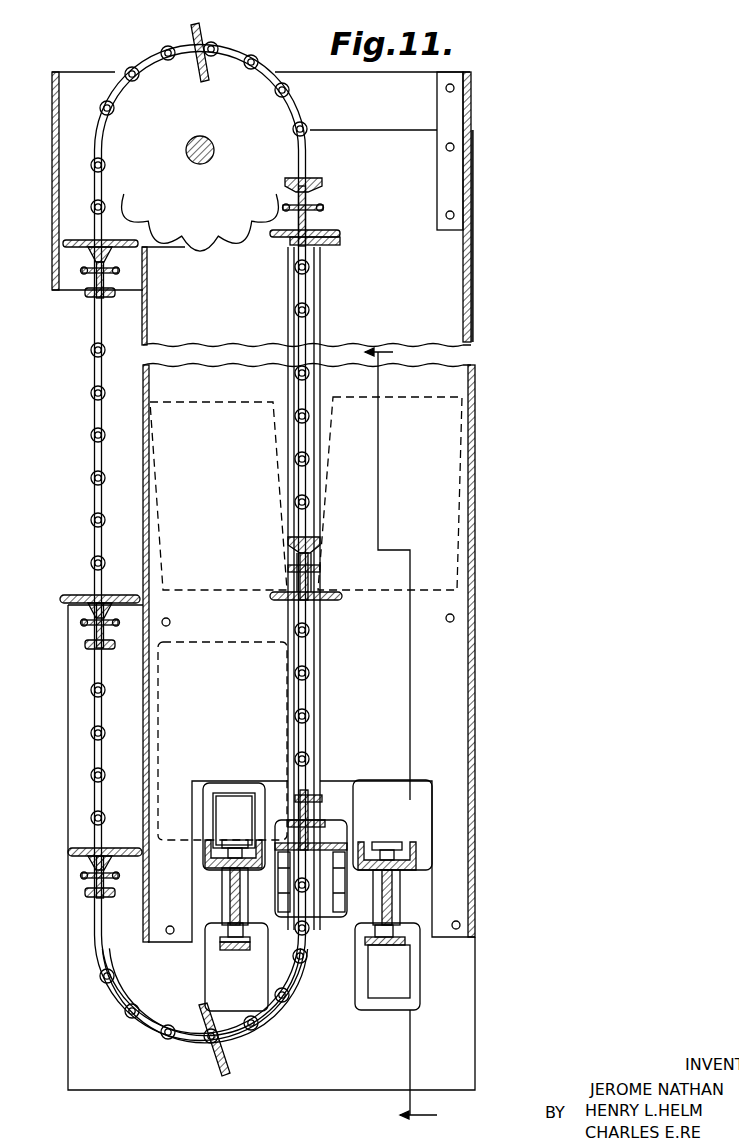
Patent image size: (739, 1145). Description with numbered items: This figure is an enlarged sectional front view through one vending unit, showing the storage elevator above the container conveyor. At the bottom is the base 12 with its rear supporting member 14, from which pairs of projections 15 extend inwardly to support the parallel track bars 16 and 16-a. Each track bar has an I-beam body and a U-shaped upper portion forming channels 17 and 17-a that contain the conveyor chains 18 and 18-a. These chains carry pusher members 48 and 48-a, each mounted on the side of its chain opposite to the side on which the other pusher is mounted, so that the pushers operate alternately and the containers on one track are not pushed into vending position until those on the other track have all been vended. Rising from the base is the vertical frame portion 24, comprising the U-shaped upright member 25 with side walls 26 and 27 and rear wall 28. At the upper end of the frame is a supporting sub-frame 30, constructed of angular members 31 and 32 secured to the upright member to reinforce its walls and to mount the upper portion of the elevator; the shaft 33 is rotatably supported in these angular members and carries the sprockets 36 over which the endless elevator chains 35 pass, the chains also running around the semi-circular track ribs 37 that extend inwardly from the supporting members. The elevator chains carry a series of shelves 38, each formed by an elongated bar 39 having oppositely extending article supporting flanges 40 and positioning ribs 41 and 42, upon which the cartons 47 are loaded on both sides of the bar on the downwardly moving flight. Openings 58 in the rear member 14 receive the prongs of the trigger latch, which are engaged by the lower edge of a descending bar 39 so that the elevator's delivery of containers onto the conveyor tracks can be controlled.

The base 12 is at (414, 734).
The rear supporting member 14 is at (470, 1010).
The projections 15 is at (225, 908).
The track bar 16 is at (230, 892).
The track bar 16-a is at (392, 885).
The channel 17 is at (222, 862).
The channel 17-a is at (410, 858).
The conveyor chain 18 is at (232, 848).
The conveyor chain 18-a is at (385, 845).
The vertical frame portion 24 is at (478, 325).
The U-shaped upright member 25 is at (462, 280).
The side wall 26 is at (148, 326).
The side wall 27 is at (465, 305).
The rear wall 28 is at (424, 284).
The top frame 30 is at (408, 72).
The angular member 31 is at (52, 145).
The angular member 32 is at (470, 108).
The shaft 33 is at (215, 152).
The elevator chain 35 is at (95, 382).
The sprocket 36 is at (285, 165).
The semi-circular track rib 37 is at (134, 993).
The shelf 38 is at (203, 41).
The elongated bar 39 is at (314, 557).
The article supporting flange 40 is at (270, 598).
The positioning rib 41 is at (288, 569).
The positioning rib 42 is at (290, 540).
The carton 47 is at (184, 416).
The pusher member 48 is at (220, 800).
The pusher member 48-a is at (375, 1005).
The opening 58 is at (287, 917).